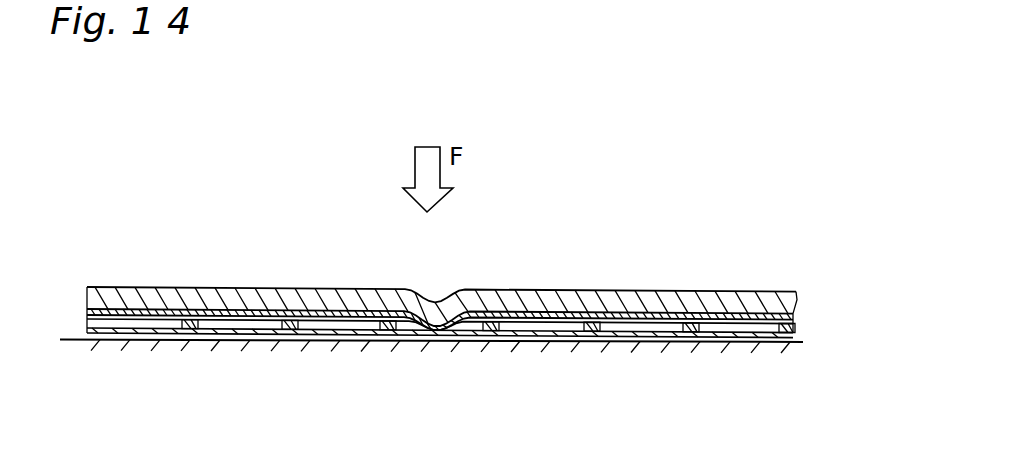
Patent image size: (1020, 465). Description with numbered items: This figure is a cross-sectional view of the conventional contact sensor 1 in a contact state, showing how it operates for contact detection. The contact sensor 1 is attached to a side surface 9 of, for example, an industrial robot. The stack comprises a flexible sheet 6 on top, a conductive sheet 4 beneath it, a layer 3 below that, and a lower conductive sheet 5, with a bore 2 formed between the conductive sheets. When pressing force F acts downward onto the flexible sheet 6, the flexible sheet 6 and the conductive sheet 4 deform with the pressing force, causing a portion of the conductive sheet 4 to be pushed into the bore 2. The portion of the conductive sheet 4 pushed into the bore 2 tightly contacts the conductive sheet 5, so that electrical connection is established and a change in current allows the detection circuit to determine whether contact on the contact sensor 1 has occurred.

The contact sensor 1 is at (150, 258).
The bore 2 is at (360, 333).
The lower electrode substrate 3 is at (790, 324).
The conductive sheet 4 is at (790, 315).
The conductive sheet 5 is at (790, 345).
The flexible sheet 6 is at (785, 295).
The side surface 9 is at (132, 348).